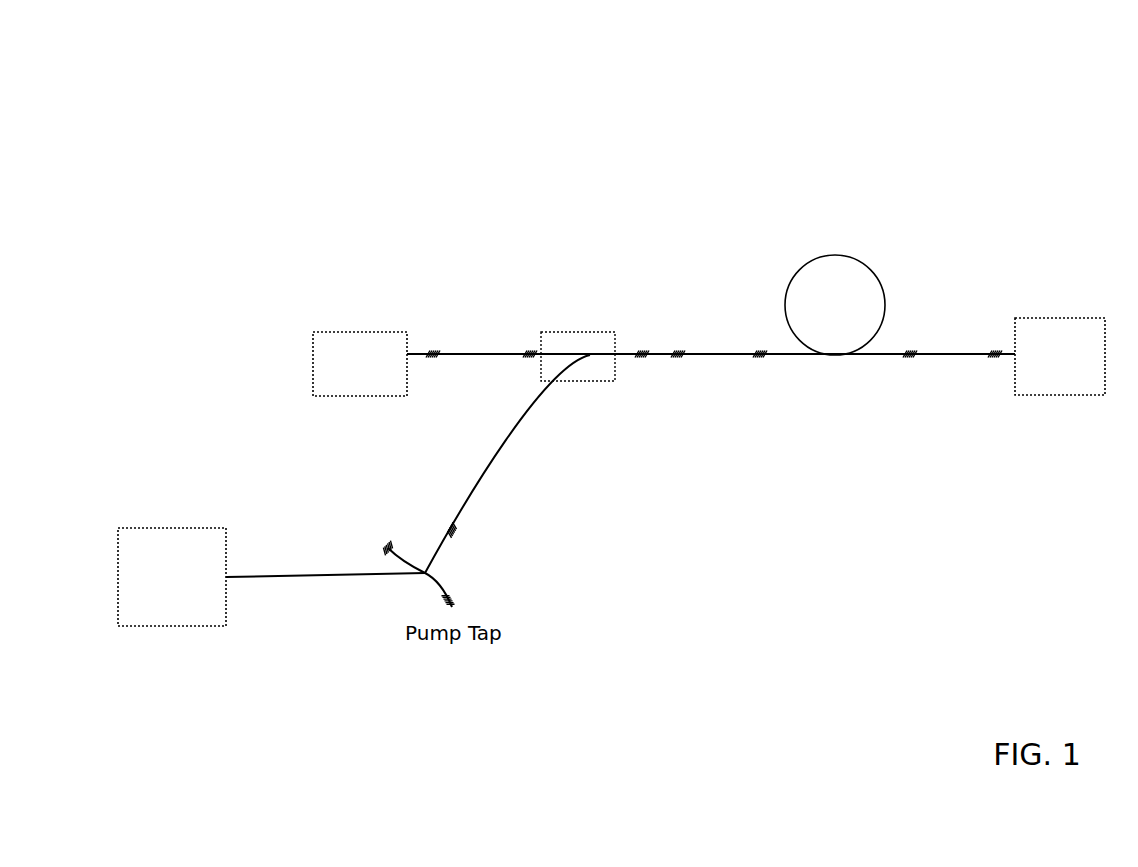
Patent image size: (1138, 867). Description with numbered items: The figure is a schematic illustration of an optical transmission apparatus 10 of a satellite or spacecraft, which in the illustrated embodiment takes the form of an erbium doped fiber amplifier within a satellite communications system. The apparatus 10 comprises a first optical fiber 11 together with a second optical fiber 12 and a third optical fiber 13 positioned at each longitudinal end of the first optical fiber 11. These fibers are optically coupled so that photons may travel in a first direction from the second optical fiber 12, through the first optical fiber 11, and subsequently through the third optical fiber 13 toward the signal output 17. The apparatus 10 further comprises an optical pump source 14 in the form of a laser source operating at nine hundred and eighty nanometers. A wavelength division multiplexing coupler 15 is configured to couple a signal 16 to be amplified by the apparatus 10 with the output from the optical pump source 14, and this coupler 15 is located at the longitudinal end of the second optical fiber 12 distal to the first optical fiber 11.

The optical transmission apparatus 10 is at (458, 116).
The first optical fiber 11 is at (818, 257).
The second optical fiber 12 is at (733, 355).
The third optical fiber 13 is at (958, 355).
The optical pump source 14 is at (166, 612).
The wavelength division multiplexing coupler 15 is at (571, 332).
The signal 16 is at (350, 332).
The signal output 17 is at (1055, 318).